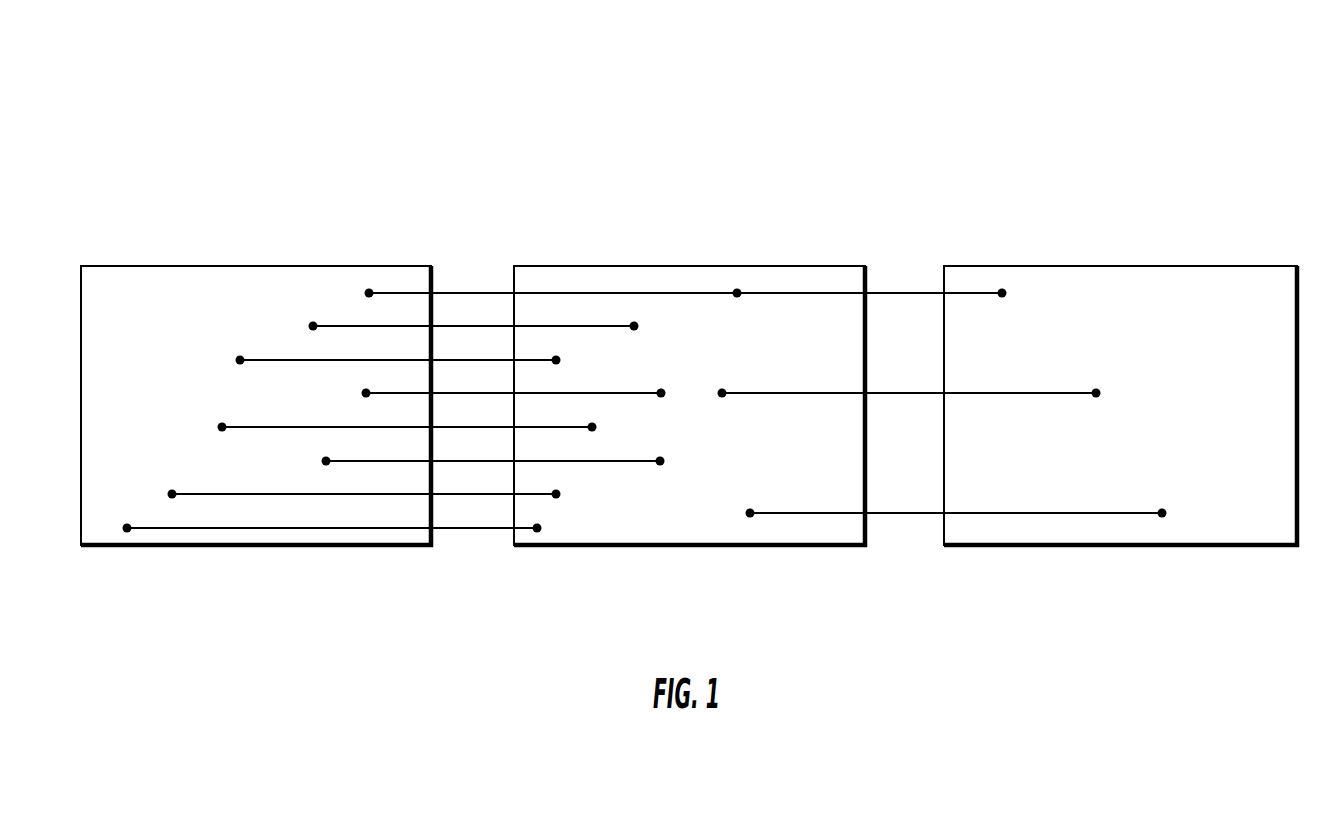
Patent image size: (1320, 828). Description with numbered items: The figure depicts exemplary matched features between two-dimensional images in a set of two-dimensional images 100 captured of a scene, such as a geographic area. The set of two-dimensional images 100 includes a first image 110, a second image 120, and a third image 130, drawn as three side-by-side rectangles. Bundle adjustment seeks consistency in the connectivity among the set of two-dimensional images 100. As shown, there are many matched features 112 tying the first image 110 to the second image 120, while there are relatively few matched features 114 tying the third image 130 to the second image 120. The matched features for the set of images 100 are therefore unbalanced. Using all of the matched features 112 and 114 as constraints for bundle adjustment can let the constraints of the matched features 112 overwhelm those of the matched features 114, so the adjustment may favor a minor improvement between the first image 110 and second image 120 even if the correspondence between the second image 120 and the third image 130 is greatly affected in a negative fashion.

The set of two-dimensional images 100 is at (809, 119).
The first image 110 is at (268, 548).
The matched features 112 is at (313, 326).
The matched features 114 is at (750, 513).
The second image 120 is at (645, 548).
The third image 130 is at (1208, 548).